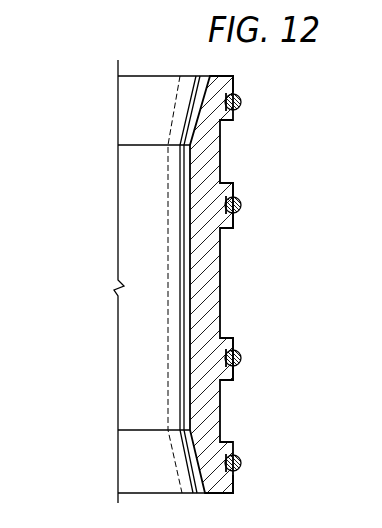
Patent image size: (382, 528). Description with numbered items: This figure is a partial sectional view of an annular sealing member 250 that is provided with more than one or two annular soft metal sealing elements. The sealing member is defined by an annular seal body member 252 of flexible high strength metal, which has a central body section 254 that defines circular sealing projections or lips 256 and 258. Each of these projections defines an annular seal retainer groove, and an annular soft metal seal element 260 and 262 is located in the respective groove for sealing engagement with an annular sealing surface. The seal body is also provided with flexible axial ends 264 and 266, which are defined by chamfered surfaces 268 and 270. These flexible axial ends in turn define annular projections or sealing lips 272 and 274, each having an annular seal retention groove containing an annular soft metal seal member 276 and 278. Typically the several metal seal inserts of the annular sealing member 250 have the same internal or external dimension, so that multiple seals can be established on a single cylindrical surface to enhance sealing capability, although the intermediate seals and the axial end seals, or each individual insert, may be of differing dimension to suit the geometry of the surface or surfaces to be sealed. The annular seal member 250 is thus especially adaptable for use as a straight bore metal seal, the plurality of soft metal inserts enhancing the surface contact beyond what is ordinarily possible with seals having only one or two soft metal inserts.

The annular sealing member 250 is at (153, 212).
The annular seal body member 252 is at (188, 324).
The central body section 254 is at (200, 278).
The circular sealing projection 256 is at (233, 182).
The circular sealing projection 258 is at (228, 340).
The annular soft metal seal element 260 is at (243, 205).
The annular soft metal seal element 262 is at (242, 358).
The flexible axial end 264 is at (210, 133).
The flexible axial end 266 is at (208, 452).
The chamfered surface 268 is at (210, 112).
The chamfered surface 270 is at (208, 474).
The annular sealing lip 272 is at (237, 83).
The annular sealing lip 274 is at (237, 488).
The annular soft metal seal member 276 is at (242, 100).
The annular soft metal seal member 278 is at (242, 458).